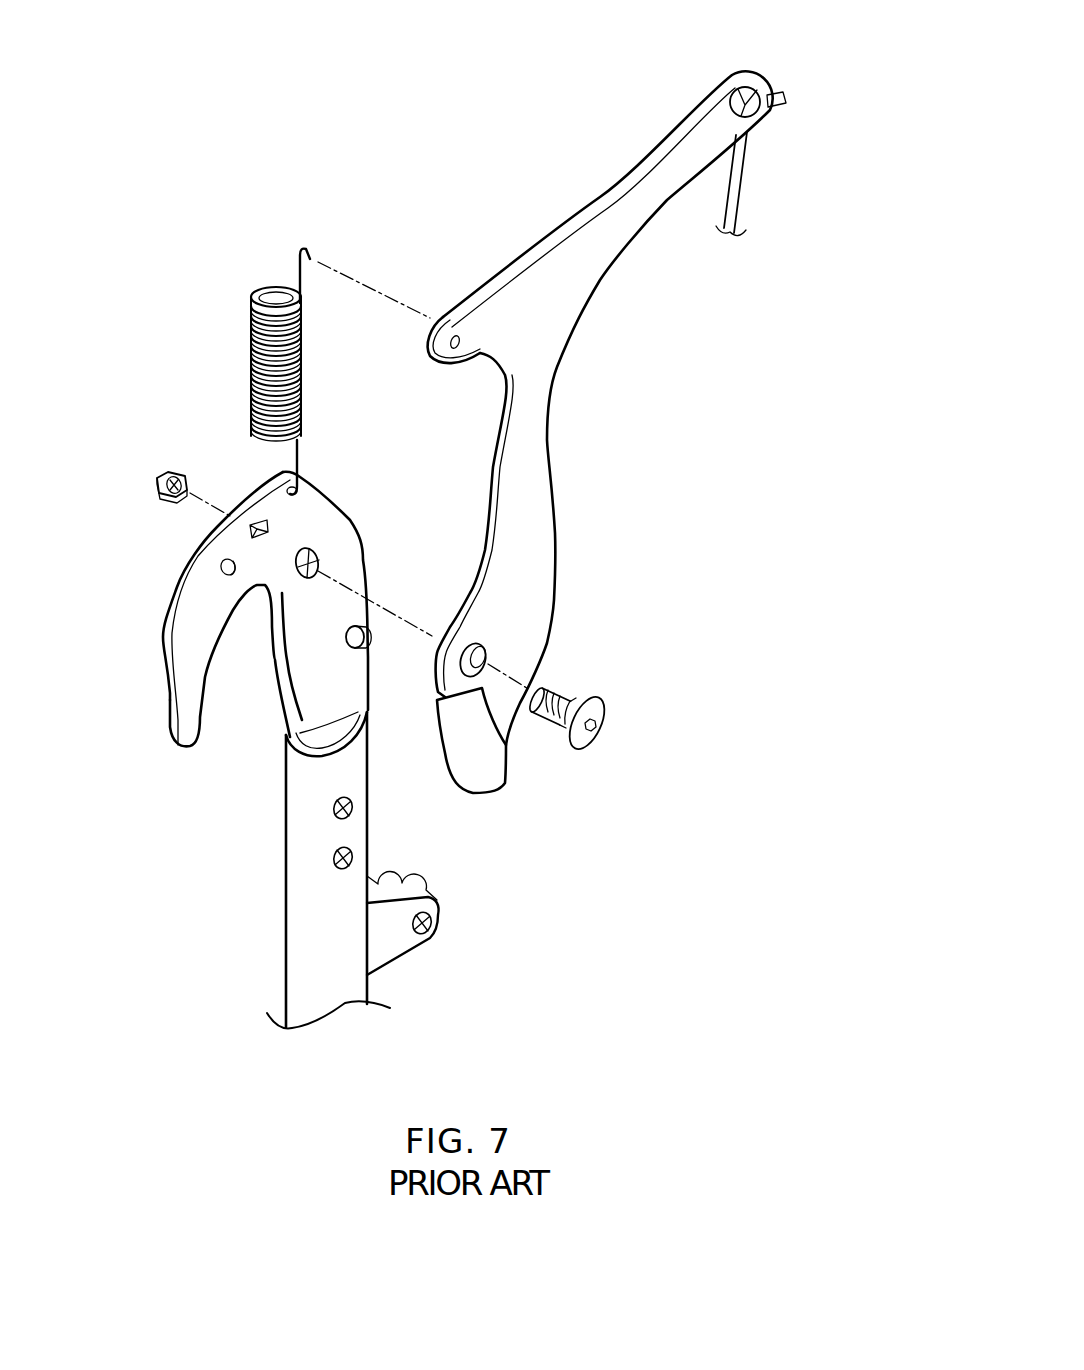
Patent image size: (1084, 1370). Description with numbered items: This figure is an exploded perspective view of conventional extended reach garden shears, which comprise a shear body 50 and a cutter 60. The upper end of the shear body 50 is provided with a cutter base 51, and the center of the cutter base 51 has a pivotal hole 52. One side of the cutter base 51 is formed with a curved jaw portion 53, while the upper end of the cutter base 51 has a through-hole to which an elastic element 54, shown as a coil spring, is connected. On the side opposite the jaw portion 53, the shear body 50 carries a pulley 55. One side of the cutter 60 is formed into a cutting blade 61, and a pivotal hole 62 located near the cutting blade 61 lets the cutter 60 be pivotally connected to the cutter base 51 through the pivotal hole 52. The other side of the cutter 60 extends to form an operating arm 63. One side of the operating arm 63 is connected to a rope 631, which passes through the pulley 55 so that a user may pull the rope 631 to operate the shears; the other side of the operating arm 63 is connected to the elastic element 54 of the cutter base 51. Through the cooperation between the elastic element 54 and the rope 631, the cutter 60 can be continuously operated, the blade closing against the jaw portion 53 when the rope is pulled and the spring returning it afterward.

The shear body 50 is at (255, 876).
The cutter base 51 is at (240, 533).
The pivotal hole 52 is at (310, 560).
The curved jaw portion 53 is at (193, 713).
The elastic element 54 is at (265, 310).
The pulley 55 is at (438, 895).
The cutter 60 is at (608, 322).
The cutting blade 61 is at (483, 770).
The pivotal hole 62 is at (482, 652).
The operating arm 63 is at (617, 235).
The rope 631 is at (735, 175).